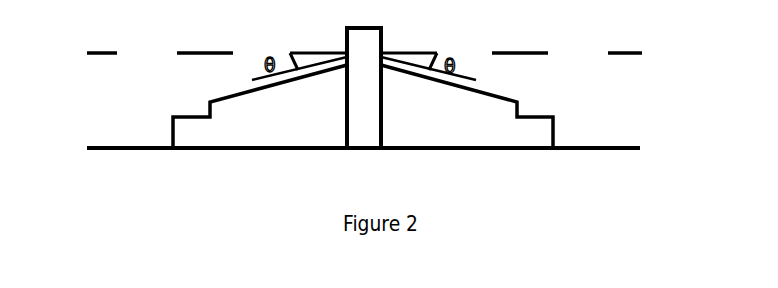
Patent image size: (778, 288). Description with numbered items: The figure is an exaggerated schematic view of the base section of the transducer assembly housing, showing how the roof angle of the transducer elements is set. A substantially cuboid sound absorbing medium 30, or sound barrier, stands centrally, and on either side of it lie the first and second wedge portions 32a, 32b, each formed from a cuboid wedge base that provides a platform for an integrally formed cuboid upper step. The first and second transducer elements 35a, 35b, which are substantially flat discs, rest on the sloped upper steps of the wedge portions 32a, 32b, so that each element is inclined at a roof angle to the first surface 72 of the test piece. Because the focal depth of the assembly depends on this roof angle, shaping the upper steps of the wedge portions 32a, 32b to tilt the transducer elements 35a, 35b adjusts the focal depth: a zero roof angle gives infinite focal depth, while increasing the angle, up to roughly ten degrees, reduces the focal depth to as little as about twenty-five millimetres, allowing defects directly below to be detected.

The first surface 72 is at (103, 142).
The sound absorbing medium 30 is at (357, 100).
The first wedge portion 32a is at (312, 97).
The second wedge portion 32b is at (427, 132).
The first transducer element 35a is at (252, 80).
The second transducer element 35b is at (465, 82).